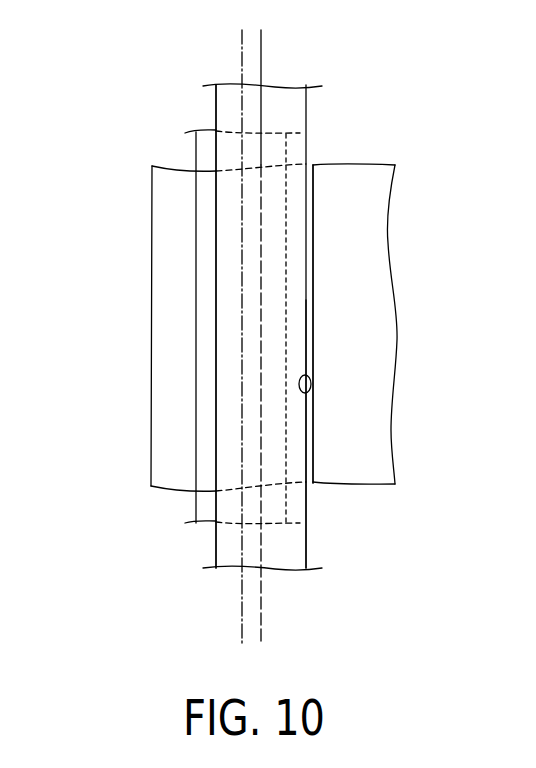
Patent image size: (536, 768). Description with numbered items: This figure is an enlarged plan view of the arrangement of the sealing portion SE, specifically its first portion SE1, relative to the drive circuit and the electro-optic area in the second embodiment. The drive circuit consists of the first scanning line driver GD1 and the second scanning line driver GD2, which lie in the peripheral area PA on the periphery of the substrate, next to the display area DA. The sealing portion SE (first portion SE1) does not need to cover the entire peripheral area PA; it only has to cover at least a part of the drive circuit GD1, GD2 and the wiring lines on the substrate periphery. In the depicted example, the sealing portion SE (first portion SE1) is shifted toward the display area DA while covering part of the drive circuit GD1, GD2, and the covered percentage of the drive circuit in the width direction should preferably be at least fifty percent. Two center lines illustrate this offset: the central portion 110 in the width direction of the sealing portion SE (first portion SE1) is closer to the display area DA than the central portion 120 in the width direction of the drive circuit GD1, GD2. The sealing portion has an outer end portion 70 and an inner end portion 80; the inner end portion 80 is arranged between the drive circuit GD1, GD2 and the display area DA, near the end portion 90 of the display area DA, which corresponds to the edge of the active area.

The central portion in the width direction of the drive circuit 120 is at (240, 52).
The central portion in the width direction of the sealing portion 110 is at (262, 52).
The first scanning line driver GD1 is at (161, 327).
The second scanning line driver GD2 is at (196, 237).
The outer end portion 70 is at (216, 337).
The inner end portion 80 is at (313, 330).
The end portion of the display area 90 is at (310, 389).
The peripheral area PA is at (172, 430).
The display area DA is at (371, 418).
The first portion SE1 is at (306, 548).
The sealing portion SE is at (290, 575).